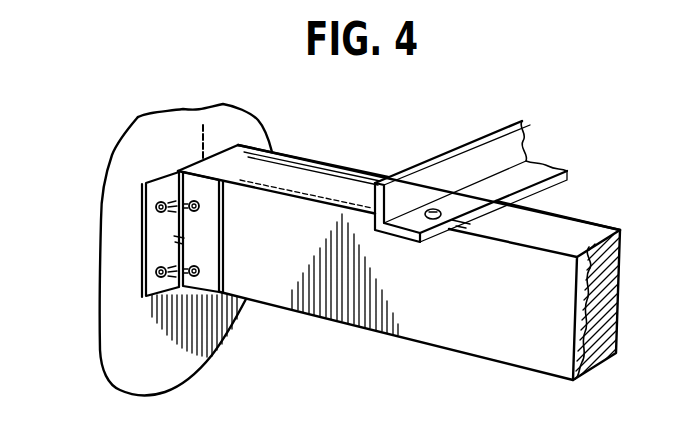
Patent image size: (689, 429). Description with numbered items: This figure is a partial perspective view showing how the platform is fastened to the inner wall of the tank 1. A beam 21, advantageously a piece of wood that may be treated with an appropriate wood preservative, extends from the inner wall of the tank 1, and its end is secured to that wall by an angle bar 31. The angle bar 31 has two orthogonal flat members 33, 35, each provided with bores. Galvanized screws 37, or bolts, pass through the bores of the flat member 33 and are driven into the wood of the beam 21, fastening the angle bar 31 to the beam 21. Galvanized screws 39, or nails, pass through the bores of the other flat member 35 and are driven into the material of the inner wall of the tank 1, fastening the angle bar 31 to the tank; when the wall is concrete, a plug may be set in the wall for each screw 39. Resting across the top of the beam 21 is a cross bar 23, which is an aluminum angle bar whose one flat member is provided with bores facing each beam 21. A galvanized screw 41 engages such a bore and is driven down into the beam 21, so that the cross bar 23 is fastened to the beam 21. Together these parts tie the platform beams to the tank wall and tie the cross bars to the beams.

The tank 1 is at (170, 123).
The beam 21 is at (522, 345).
The cross bar 23 is at (473, 156).
The galvanized screw 41 is at (432, 209).
The angle bar 31 is at (167, 250).
The flat member 33 is at (223, 272).
The flat member 35 is at (142, 290).
The galvanized screws 37 is at (205, 204).
The galvanized screws 39 is at (150, 201).